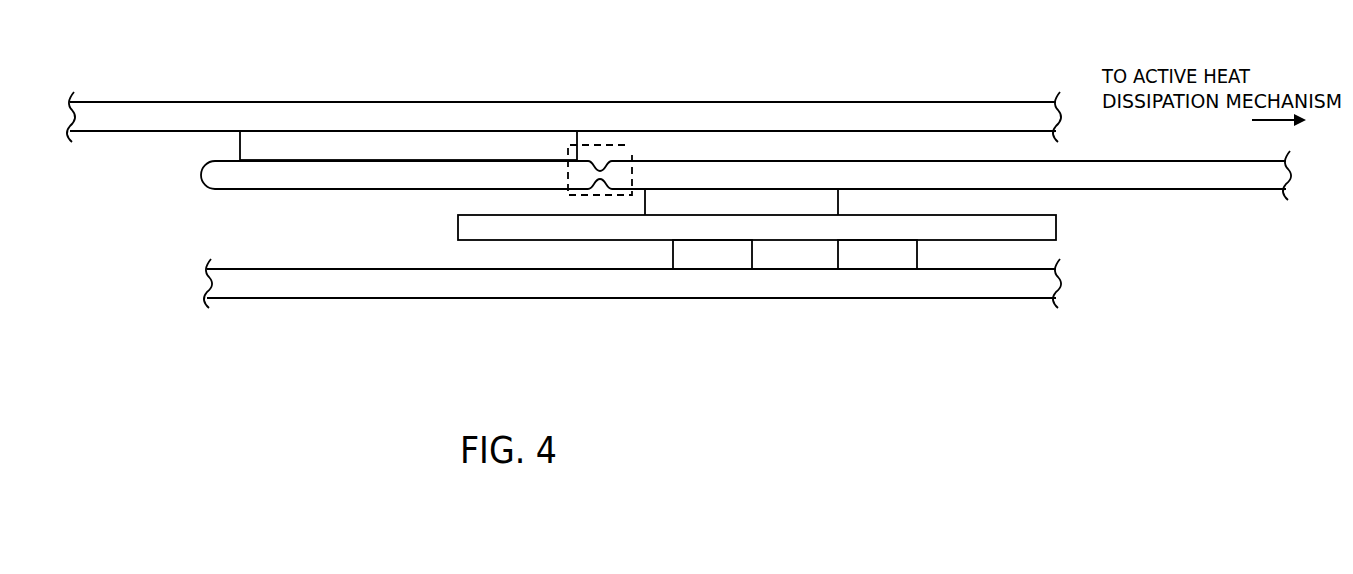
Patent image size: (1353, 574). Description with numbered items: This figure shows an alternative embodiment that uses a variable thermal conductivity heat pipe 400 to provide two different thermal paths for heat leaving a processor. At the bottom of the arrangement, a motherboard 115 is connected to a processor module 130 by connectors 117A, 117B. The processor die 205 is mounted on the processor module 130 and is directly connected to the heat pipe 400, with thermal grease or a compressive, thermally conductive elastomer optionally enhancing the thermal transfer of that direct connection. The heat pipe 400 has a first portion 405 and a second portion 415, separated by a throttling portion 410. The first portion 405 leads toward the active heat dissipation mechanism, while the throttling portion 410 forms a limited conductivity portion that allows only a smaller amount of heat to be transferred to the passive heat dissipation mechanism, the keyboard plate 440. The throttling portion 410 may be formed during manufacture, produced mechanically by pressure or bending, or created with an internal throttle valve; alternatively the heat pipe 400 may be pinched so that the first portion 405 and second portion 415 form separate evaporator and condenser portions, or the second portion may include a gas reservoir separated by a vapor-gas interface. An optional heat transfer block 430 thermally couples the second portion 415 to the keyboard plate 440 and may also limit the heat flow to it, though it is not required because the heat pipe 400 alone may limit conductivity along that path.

The keyboard plate 440 is at (805, 108).
The optional heat transfer block 430 is at (240, 144).
The variable thermal conductivity heat pipe 400 is at (746, 188).
The second portion 415 is at (346, 185).
The first portion 405 is at (899, 181).
The throttling portion 410 is at (634, 154).
The processor die 205 is at (725, 73).
The processor module 130 is at (1039, 235).
The connector 117A is at (731, 265).
The connector 117B is at (908, 265).
The motherboard 115 is at (731, 293).